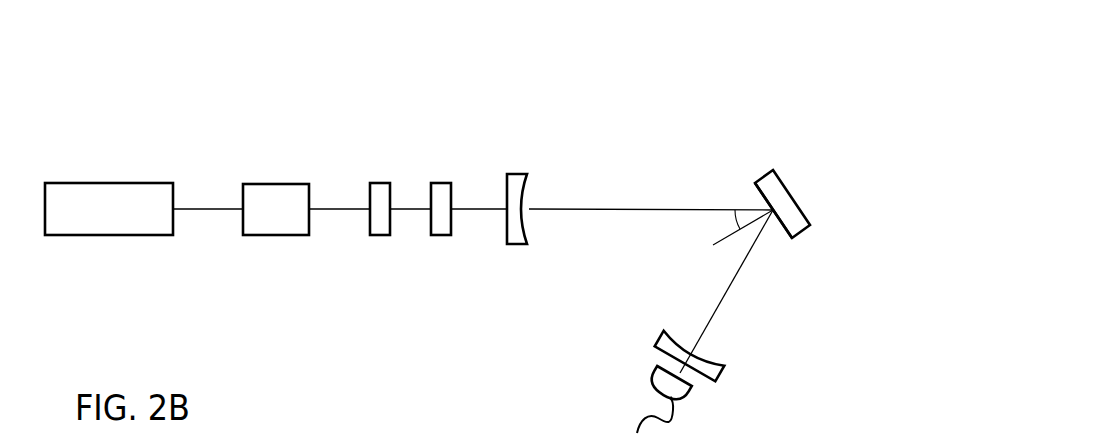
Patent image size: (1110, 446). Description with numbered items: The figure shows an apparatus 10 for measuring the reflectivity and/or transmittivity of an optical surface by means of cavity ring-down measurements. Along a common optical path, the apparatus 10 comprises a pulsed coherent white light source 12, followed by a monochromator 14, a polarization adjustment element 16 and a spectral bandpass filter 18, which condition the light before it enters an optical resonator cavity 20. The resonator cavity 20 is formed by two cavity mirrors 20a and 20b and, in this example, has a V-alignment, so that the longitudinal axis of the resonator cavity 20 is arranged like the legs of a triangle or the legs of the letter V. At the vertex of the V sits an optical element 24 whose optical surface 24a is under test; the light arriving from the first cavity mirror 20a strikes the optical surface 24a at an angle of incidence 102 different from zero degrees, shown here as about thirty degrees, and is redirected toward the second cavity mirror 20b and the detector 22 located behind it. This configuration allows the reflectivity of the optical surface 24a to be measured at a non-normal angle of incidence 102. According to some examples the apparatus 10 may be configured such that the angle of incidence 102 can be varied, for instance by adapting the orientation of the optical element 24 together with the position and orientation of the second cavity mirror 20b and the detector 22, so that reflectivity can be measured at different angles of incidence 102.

The apparatus 10 is at (658, 113).
The pulsed coherent white light source 12 is at (97, 172).
The monochromator 14 is at (267, 171).
The polarization adjustment element 16 is at (376, 171).
The spectral bandpass filter 18 is at (450, 173).
The optical resonator cavity 20 is at (788, 286).
The first cavity mirror 20a is at (517, 166).
The second cavity mirror 20b is at (720, 357).
The detector 22 is at (692, 397).
The optical element 24 is at (791, 197).
The optical surface 24a is at (752, 190).
The angle of incidence 102 is at (738, 217).